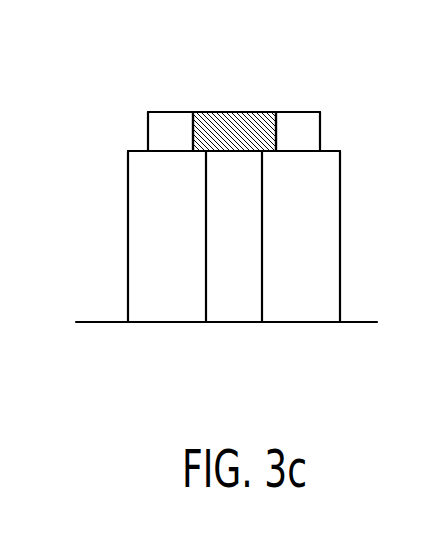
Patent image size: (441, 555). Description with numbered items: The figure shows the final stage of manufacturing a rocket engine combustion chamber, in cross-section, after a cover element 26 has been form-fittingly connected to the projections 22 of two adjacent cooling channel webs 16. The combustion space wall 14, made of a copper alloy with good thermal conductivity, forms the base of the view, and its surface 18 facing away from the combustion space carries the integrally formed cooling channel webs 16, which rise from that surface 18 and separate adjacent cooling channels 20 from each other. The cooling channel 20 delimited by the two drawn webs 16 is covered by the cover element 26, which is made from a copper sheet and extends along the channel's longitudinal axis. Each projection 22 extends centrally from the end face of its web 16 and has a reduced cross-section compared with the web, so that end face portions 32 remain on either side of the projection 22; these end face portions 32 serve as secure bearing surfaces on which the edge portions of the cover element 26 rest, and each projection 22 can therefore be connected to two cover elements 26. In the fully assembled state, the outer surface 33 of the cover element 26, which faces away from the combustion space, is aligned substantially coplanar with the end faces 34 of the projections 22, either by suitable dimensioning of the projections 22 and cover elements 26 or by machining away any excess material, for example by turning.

The combustion space wall 14 is at (130, 373).
The cooling channel webs 16 is at (141, 235).
The surface of the combustion space wall 18 is at (107, 320).
The cooling channel 20 is at (233, 321).
The projection 22 is at (157, 128).
The cover element 26 is at (219, 117).
The end face portions 32 is at (137, 150).
The outer surface of the cover elements 33 is at (248, 112).
The end faces of the projections 34 is at (170, 112).